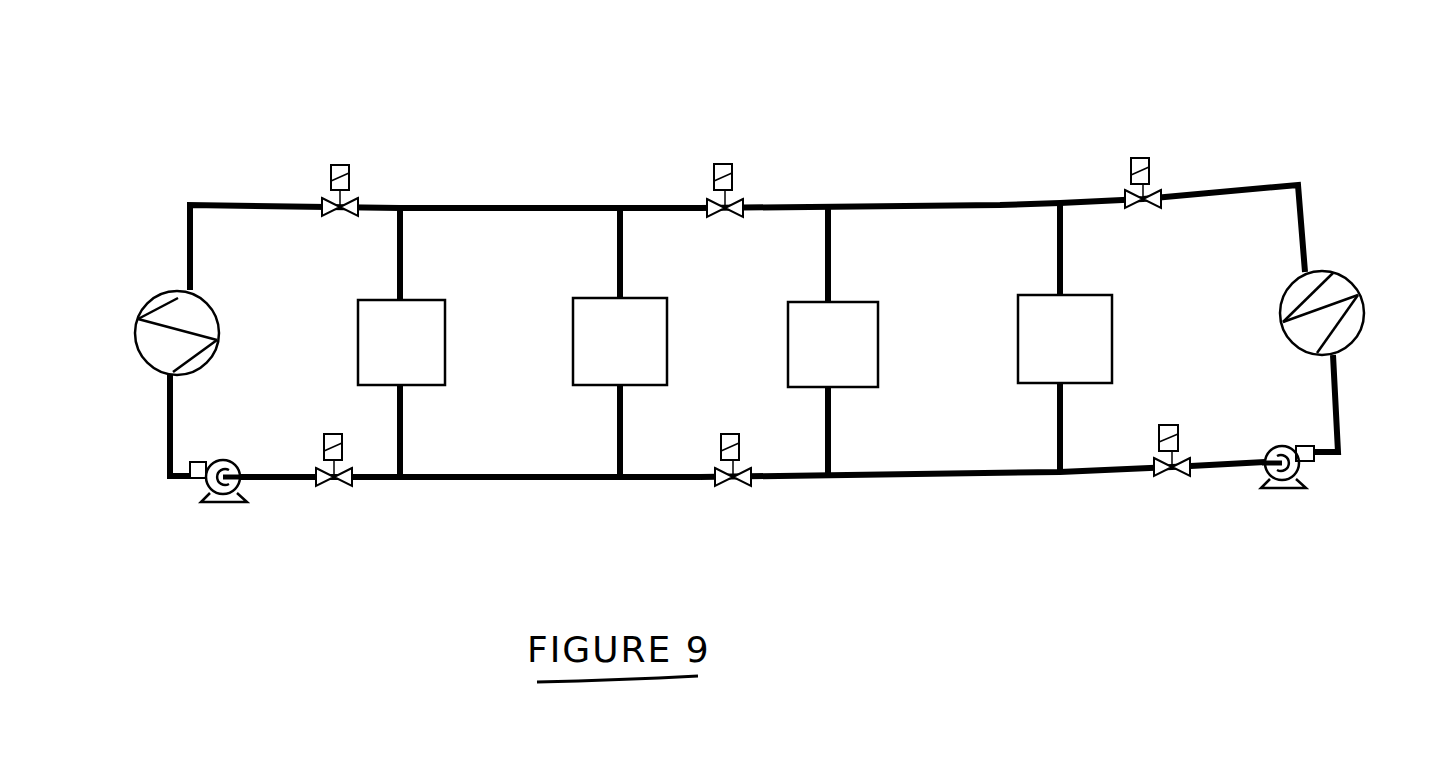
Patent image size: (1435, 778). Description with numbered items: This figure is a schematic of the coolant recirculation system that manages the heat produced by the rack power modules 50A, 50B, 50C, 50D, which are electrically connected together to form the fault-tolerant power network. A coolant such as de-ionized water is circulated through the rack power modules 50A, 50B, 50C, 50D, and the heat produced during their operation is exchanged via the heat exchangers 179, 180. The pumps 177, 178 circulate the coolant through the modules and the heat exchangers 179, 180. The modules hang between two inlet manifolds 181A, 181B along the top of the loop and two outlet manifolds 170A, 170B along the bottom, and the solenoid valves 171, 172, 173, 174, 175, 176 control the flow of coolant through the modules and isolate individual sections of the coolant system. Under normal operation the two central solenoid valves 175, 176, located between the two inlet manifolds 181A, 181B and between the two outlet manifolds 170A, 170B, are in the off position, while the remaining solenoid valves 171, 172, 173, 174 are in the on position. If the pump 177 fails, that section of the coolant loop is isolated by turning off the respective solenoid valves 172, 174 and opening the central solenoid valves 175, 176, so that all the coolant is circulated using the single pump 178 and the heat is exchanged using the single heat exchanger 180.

The rack power module 50A is at (358, 318).
The rack power module 50B is at (573, 330).
The rack power module 50C is at (788, 330).
The rack power module 50D is at (1018, 335).
The outlet manifold 170A is at (1225, 470).
The outlet manifold 170B is at (275, 480).
The solenoid valve 171 is at (334, 173).
The solenoid valve 172 is at (1138, 168).
The solenoid valve 173 is at (330, 477).
The solenoid valve 174 is at (1165, 467).
The central solenoid valve 175 is at (715, 172).
The central solenoid valve 176 is at (724, 478).
The pump 177 is at (1289, 479).
The pump 178 is at (214, 497).
The heat exchanger 179 is at (1348, 313).
The heat exchanger 180 is at (138, 333).
The inlet manifold 181A is at (1222, 192).
The inlet manifold 181B is at (228, 197).